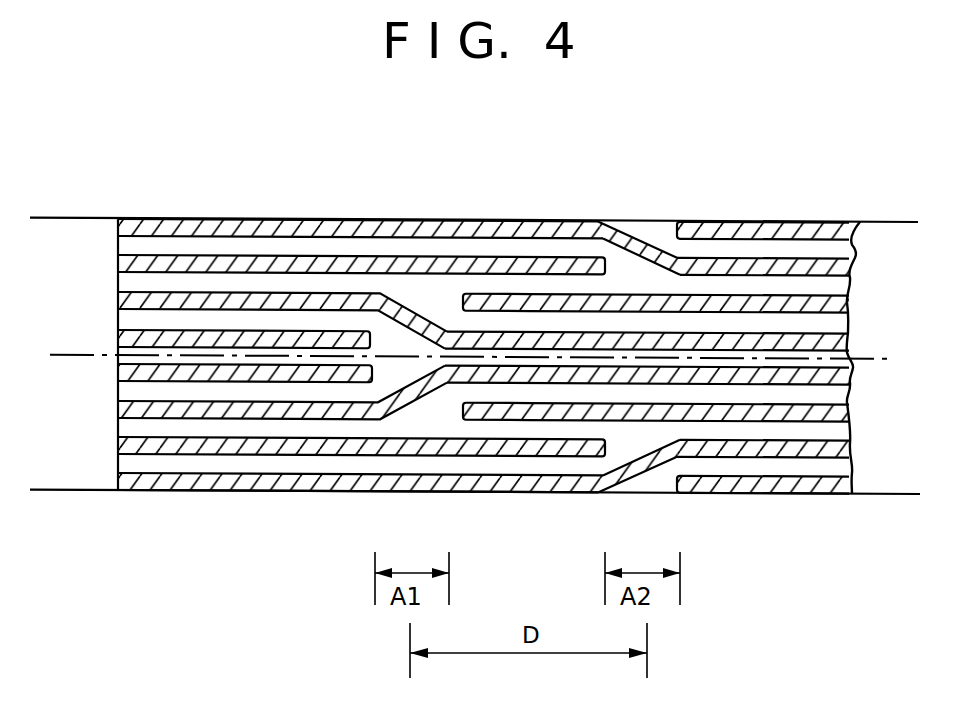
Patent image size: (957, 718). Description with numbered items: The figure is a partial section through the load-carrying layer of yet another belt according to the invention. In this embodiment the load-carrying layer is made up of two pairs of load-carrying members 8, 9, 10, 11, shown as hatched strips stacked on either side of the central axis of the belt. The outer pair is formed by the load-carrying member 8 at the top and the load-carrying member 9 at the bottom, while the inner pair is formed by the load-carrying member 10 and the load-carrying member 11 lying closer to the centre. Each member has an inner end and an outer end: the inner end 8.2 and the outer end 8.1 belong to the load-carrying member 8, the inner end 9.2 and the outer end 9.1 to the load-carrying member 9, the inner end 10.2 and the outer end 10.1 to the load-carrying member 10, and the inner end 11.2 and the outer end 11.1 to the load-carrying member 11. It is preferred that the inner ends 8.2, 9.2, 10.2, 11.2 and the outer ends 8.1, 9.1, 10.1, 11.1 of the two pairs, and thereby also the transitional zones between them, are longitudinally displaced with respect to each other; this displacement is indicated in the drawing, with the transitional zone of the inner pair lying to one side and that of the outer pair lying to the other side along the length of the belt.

The load-carrying member 8 is at (175, 218).
The outer end of load-carrying member 8.1 is at (676, 230).
The inner end of load-carrying member 8.2 is at (603, 222).
The load-carrying member 9 is at (200, 488).
The outer end of load-carrying member 9.1 is at (678, 480).
The inner end of load-carrying member 9.2 is at (592, 491).
The load-carrying member 10 is at (640, 241).
The outer end of load-carrying member 10.1 is at (463, 298).
The inner end of load-carrying member 10.2 is at (382, 291).
The load-carrying member 11 is at (637, 465).
The outer end of load-carrying member 11.1 is at (462, 408).
The inner end of load-carrying member 11.2 is at (372, 403).